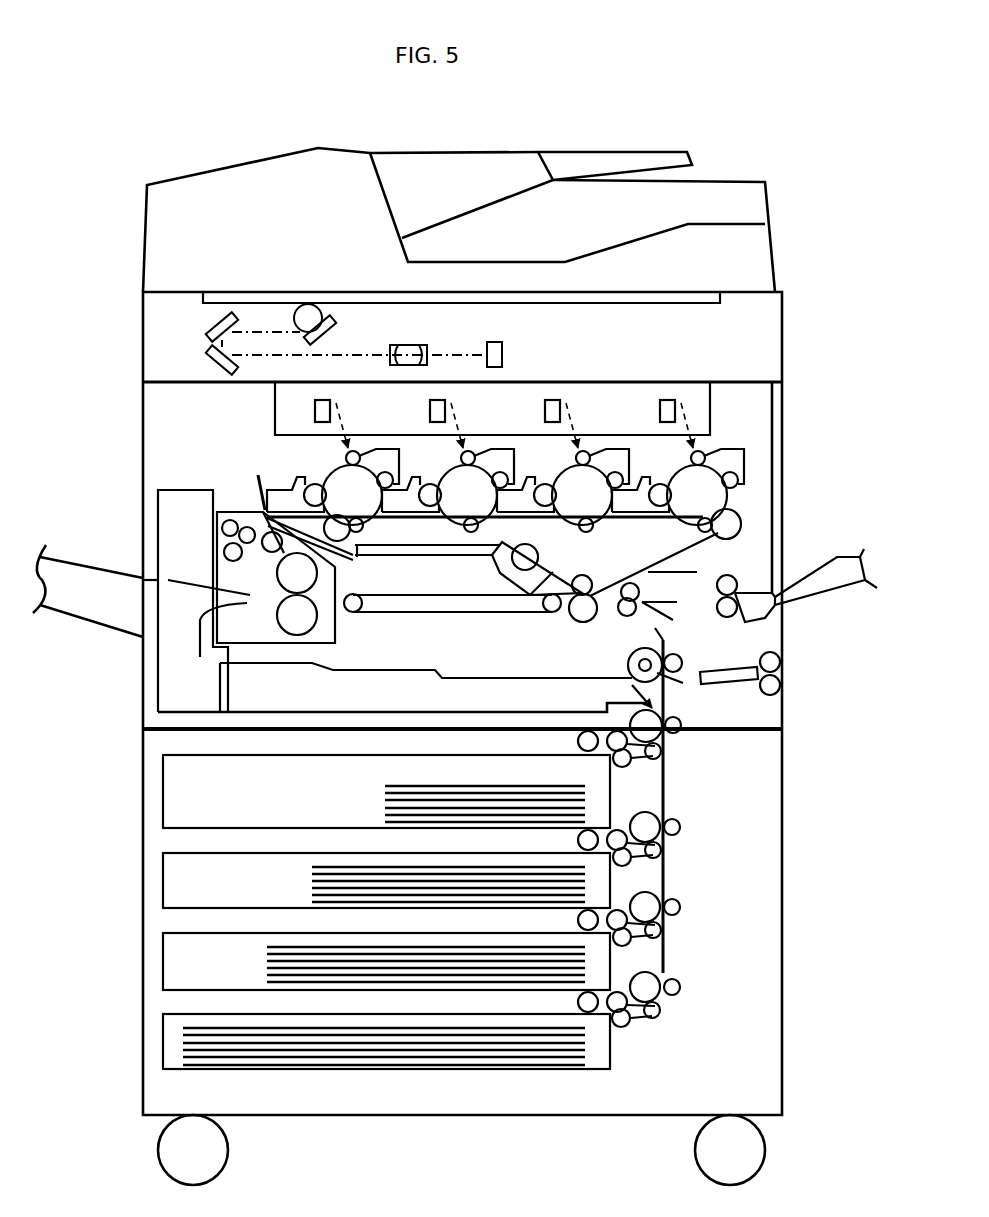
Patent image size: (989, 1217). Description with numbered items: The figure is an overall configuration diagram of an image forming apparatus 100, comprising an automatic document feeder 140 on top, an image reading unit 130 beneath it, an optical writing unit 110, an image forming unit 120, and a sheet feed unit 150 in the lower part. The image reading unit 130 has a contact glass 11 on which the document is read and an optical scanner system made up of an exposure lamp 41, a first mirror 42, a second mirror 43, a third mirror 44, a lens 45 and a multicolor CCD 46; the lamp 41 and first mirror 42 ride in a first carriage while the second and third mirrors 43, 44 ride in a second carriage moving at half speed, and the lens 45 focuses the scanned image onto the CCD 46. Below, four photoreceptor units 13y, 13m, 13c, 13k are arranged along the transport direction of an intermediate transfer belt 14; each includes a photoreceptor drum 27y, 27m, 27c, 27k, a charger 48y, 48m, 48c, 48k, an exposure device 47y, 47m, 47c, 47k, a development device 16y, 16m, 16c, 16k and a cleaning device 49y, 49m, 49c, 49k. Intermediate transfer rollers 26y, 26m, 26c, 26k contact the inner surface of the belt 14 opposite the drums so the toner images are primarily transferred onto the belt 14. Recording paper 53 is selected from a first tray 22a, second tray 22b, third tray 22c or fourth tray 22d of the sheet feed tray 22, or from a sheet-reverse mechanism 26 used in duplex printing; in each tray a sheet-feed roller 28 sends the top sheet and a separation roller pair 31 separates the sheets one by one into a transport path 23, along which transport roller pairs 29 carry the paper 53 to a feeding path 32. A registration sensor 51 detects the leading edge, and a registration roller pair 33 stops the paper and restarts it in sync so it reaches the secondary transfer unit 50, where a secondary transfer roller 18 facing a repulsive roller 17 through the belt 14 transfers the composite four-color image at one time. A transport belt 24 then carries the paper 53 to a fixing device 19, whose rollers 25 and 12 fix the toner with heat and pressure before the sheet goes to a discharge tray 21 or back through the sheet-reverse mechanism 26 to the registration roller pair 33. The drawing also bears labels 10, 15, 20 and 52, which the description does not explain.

The image forming apparatus 100 is at (753, 152).
The automatic document feeder 140 is at (163, 180).
The image reading unit 130 is at (297, 321).
The image forming unit 120 is at (456, 408).
The optical writing unit 110 is at (510, 548).
The sheet feed unit 150 is at (438, 876).
The laser scanning unit housing 10 is at (622, 381).
The contact glass 11 is at (647, 297).
The roller 12 is at (330, 643).
The photoreceptor unit 13k is at (330, 474).
The photoreceptor unit 13m is at (445, 474).
The photoreceptor unit 13c is at (560, 474).
The photoreceptor unit 13y is at (675, 474).
The intermediate transfer belt 14 is at (432, 555).
The belt lower run 15 is at (357, 557).
The development device 16k is at (312, 484).
The development device 16m is at (438, 472).
The development device 16c is at (550, 472).
The development device 16y is at (665, 472).
The repulsive roller 17 is at (590, 578).
The secondary transfer roller 18 is at (582, 623).
The fixing device 19 is at (253, 510).
The belt drive roller 20 is at (742, 520).
The discharge tray 21 is at (103, 566).
The sheet feed tray 22 is at (324, 912).
The first tray 22a is at (163, 815).
The second tray 22b is at (163, 895).
The third tray 22c is at (163, 975).
The fourth tray 22d is at (345, 1041).
The transport path 23 is at (665, 968).
The transport belt 24 is at (490, 614).
The roller 25 is at (317, 590).
The sheet-reverse mechanism 26 is at (405, 678).
The intermediate transfer roller 26k is at (363, 528).
The intermediate transfer roller 26m is at (478, 528).
The intermediate transfer roller 26c is at (593, 528).
The intermediate transfer roller 26y is at (698, 527).
The photoreceptor drum 27k is at (368, 507).
The photoreceptor drum 27m is at (485, 507).
The photoreceptor drum 27c is at (598, 507).
The photoreceptor drum 27y is at (713, 507).
The sheet-feed roller 28 is at (578, 744).
The transport roller pairs 29 is at (677, 732).
The separation roller pair 31 is at (631, 767).
The feeding path 32 is at (667, 705).
The registration roller pair 33 is at (681, 663).
The exposure lamp 41 is at (323, 303).
The first mirror 42 is at (333, 327).
The second mirror 43 is at (210, 322).
The third mirror 44 is at (210, 358).
The lens 45 is at (412, 345).
The multiple color charge coupled device 46 is at (495, 342).
The exposure device 47k is at (322, 400).
The exposure device 47m is at (437, 400).
The exposure device 47c is at (551, 400).
The exposure device 47y is at (666, 400).
The charger 48k is at (379, 476).
The charger 48m is at (494, 476).
The charger 48c is at (609, 476).
The charger 48y is at (732, 472).
The cleaning device 49k is at (359, 450).
The cleaning device 49m is at (474, 450).
The cleaning device 49c is at (589, 450).
The cleaning device 49y is at (705, 452).
The secondary transfer unit 50 is at (603, 600).
The registration sensor 51 is at (632, 692).
The belt cleaning device 52 is at (503, 568).
The recording paper 53 is at (550, 1071).